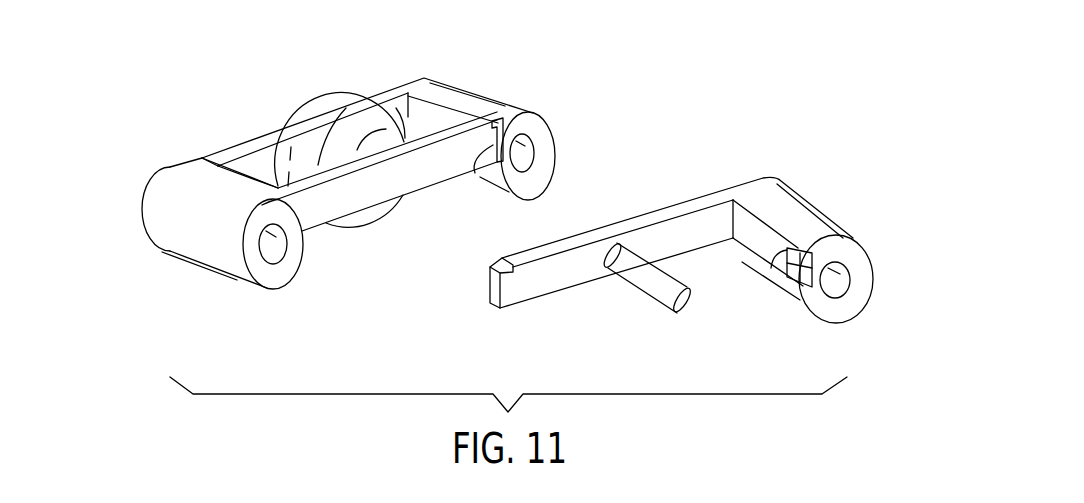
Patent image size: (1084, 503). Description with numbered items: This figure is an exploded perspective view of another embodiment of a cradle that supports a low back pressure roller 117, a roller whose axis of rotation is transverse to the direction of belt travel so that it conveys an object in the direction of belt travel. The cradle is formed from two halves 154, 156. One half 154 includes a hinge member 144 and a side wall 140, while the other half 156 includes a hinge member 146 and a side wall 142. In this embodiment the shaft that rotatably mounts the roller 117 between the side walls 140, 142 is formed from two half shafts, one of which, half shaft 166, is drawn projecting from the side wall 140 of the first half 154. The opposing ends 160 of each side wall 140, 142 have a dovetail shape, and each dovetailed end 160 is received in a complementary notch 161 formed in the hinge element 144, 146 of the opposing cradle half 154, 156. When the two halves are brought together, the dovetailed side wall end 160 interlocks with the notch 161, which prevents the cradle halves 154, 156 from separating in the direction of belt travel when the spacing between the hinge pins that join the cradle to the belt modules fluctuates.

The cradle half 154 is at (514, 188).
The side wall 140 is at (247, 143).
The low back pressure roller 117 is at (335, 103).
The side wall 142 is at (427, 188).
The hinge member 146 is at (213, 280).
The cradle half 156 is at (255, 304).
The notch 161 is at (556, 119).
The side wall end 160 is at (487, 160).
The hinge member 144 is at (823, 210).
The half shaft 166 is at (650, 283).